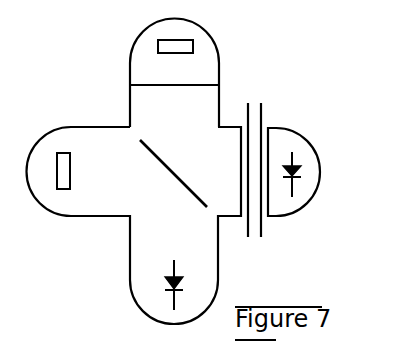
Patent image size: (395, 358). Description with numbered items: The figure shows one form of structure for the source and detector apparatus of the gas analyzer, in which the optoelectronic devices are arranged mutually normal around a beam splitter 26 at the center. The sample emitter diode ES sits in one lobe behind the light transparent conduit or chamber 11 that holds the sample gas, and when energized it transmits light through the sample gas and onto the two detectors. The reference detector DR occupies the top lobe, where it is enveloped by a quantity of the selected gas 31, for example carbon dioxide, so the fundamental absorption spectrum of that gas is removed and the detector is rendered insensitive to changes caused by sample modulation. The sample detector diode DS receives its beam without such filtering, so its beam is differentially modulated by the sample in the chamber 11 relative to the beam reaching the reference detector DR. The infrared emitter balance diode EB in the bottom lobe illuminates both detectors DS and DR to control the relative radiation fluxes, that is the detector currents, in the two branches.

The quantity of the selected gas 31 is at (218, 77).
The light transparent conduit or chamber 11 is at (265, 130).
The beam splitter 26 is at (183, 184).
The reference detector DR is at (181, 61).
The sample detector diode DS is at (77, 171).
The sample emitter diode ES is at (297, 170).
The infrared radiation emitter balance diode EB is at (186, 285).